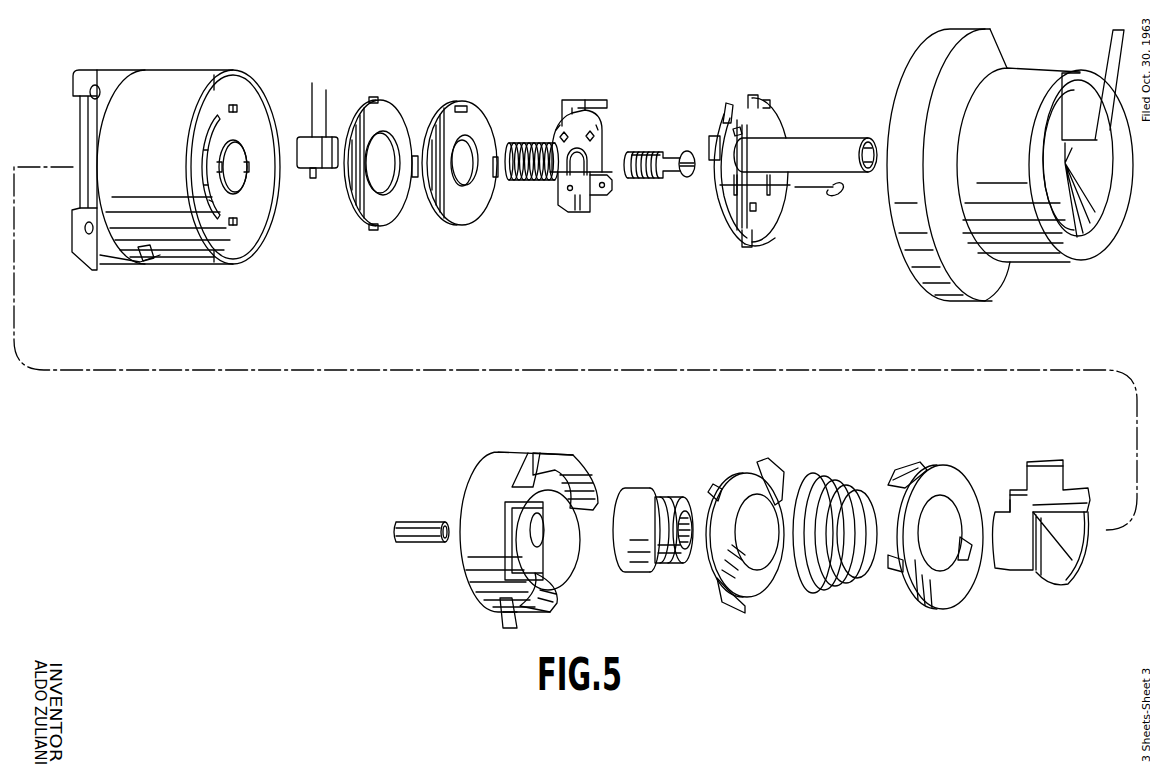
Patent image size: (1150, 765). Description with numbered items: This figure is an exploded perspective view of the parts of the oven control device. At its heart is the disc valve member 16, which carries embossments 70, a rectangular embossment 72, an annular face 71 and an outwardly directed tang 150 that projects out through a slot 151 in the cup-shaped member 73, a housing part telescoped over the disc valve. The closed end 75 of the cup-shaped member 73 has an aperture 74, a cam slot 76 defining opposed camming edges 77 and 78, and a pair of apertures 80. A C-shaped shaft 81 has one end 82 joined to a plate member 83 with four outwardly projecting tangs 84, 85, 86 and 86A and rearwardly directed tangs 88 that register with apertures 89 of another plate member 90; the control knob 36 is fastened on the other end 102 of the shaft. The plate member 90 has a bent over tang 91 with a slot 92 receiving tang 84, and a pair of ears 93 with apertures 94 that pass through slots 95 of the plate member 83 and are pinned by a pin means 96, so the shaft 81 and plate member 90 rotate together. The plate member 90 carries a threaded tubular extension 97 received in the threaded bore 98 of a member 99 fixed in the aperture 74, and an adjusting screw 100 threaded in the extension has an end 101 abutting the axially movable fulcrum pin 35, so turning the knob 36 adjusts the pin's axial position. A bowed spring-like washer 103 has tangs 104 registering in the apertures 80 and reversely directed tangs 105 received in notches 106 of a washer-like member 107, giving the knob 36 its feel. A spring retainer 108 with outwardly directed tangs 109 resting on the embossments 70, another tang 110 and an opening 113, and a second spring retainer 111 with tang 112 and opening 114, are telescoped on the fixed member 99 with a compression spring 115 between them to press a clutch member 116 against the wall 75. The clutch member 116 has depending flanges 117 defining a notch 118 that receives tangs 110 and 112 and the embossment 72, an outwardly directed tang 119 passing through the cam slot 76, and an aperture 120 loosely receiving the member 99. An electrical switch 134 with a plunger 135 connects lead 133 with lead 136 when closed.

The disc valve member 16 is at (487, 470).
The fulcrum pin 35 is at (392, 530).
The control knob 36 is at (1050, 258).
The embossments 70 is at (580, 472).
The annular face 71 is at (562, 558).
The rectangular embossment 72 is at (533, 462).
The cup-shaped member 73 is at (174, 70).
The aperture 74 is at (246, 182).
The closed end 75 is at (258, 217).
The cam slot 76 is at (203, 187).
The camming edge 77 is at (211, 207).
The camming edge 78 is at (197, 157).
The apertures 80 is at (238, 109).
The C-shaped shaft 81 is at (821, 138).
The end of shaft 82 is at (752, 140).
The plate member 83 is at (762, 222).
The tang 84 is at (758, 95).
The tang 85 is at (724, 116).
The tang 86 is at (714, 148).
The tang 86A is at (751, 248).
The rearwardly directed tangs 88 is at (740, 128).
The apertures 89 is at (596, 136).
The plate member 90 is at (571, 128).
The bent over tang 91 is at (598, 100).
The slot 92 is at (588, 107).
The ears 93 is at (560, 195).
The apertures 94 is at (576, 200).
The slots 95 is at (770, 177).
The pin means 96 is at (839, 186).
The tubular extension 97 is at (522, 182).
The threaded bore 98 is at (689, 548).
The member 99 is at (656, 500).
The adjusting screw 100 is at (651, 178).
The end of adjusting screw 101 is at (629, 160).
The other end of shaft 102 is at (854, 138).
The bowed spring-like washer 103 is at (392, 112).
The tangs 104 is at (374, 97).
The reversely directed tangs 105 is at (416, 156).
The notches 106 is at (496, 158).
The washer-like member 107 is at (473, 124).
The spring retainer 108 is at (758, 583).
The outwardly directed tangs 109 is at (769, 470).
The tang 110 is at (712, 490).
The spring retainer 111 is at (954, 477).
The outwardly directed tang 112 is at (896, 475).
The opening 113 is at (766, 487).
The opening 114 is at (920, 563).
The compression spring 115 is at (831, 484).
The clutch member 116 is at (1061, 482).
The depending flanges 117 is at (1022, 482).
The notch 118 is at (1004, 506).
The outwardly directed tang 119 is at (1079, 493).
The aperture 120 is at (1084, 553).
The lead 133 is at (326, 97).
The electrical switch 134 is at (328, 140).
The plunger 135 is at (315, 178).
The lead 136 is at (312, 83).
The outwardly directed tang 150 is at (519, 612).
The slot 151 is at (156, 266).